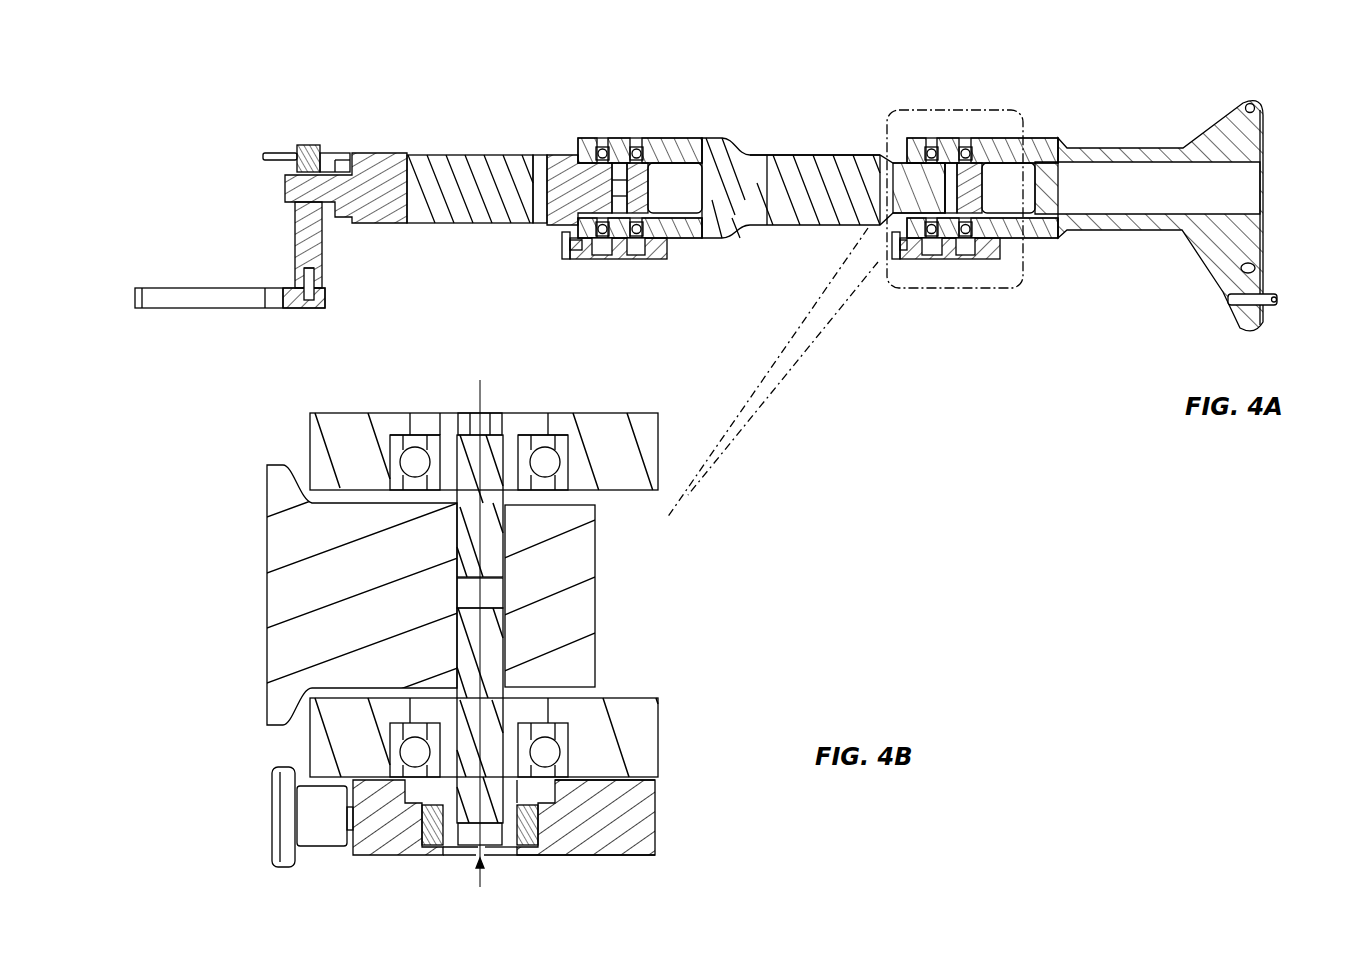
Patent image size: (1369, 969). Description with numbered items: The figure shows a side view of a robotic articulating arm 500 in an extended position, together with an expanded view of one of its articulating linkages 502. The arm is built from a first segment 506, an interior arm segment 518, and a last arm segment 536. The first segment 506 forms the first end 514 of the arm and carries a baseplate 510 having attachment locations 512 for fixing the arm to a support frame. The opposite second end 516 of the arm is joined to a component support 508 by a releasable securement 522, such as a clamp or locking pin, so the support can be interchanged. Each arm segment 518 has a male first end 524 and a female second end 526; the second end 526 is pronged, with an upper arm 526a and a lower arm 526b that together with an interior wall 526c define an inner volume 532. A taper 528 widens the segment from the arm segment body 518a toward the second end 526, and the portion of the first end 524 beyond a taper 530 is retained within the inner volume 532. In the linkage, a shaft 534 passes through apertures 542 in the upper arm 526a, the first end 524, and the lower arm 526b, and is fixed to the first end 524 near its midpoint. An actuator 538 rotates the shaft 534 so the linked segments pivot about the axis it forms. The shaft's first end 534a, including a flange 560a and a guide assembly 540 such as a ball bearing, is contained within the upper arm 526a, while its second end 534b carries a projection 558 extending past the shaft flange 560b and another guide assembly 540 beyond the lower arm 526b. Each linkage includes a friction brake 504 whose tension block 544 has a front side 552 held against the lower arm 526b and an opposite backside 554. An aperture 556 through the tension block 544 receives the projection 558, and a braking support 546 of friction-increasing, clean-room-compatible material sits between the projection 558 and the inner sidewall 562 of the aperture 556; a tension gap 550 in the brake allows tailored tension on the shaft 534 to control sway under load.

In FIG. 4A, the articulating arm 500 is at (328, 50).
In FIG. 4A, the articulating linkage 502 is at (608, 120).
In FIG. 4B, the articulating linkage 502 is at (238, 417).
In FIG. 4B, the friction brake 504 is at (770, 825).
In FIG. 4A, the first segment 506 is at (1143, 148).
In FIG. 4A, the component support 508 is at (195, 290).
In FIG. 4A, the baseplate 510 is at (1266, 112).
In FIG. 4A, the attachment location 512 is at (1238, 108).
In FIG. 4A, the first end 514 is at (1266, 232).
In FIG. 4A, the second end 516 is at (352, 153).
In FIG. 4A, the arm segment 518 is at (800, 76).
In FIG. 4B, the arm segment 518 is at (266, 560).
In FIG. 4A, the arm segment body 518a is at (830, 150).
In FIG. 4A, the releasable securement 522 is at (266, 130).
In FIG. 4A, the first end 524 is at (898, 157).
In FIG. 4B, the first end 524 is at (575, 538).
In FIG. 4A, the second end 526 is at (693, 197).
In FIG. 4A, the upper arm 526a is at (703, 132).
In FIG. 4B, the upper arm 526a is at (484, 407).
In FIG. 4A, the lower arm 526b is at (703, 232).
In FIG. 4B, the lower arm 526b is at (638, 702).
In FIG. 4A, the interior wall 526c is at (712, 176).
In FIG. 4A, the taper 528 is at (703, 200).
In FIG. 4A, the taper 530 is at (576, 160).
In FIG. 4A, the inner volume 532 is at (655, 190).
In FIG. 4B, the shaft 534 is at (520, 591).
In FIG. 4B, the first end 534a is at (496, 432).
In FIG. 4B, the second end 534b is at (504, 798).
In FIG. 4A, the last arm segment 536 is at (452, 153).
In FIG. 4B, the actuator 538 is at (492, 596).
In FIG. 4B, the guide assembly 540 is at (562, 466).
In FIG. 4B, the aperture 542 is at (547, 432).
In FIG. 4B, the tension block 544 is at (625, 816).
In FIG. 4B, the braking support 546 is at (436, 832).
In FIG. 4B, the tension gap 550 is at (474, 855).
In FIG. 4B, the front side 552 is at (656, 786).
In FIG. 4B, the backside 554 is at (656, 851).
In FIG. 4B, the aperture 556 is at (488, 868).
In FIG. 4B, the projection 558 is at (505, 822).
In FIG. 4B, the flange 560a is at (455, 432).
In FIG. 4B, the shaft flange 560b is at (535, 792).
In FIG. 4B, the inner sidewall 562 is at (410, 828).